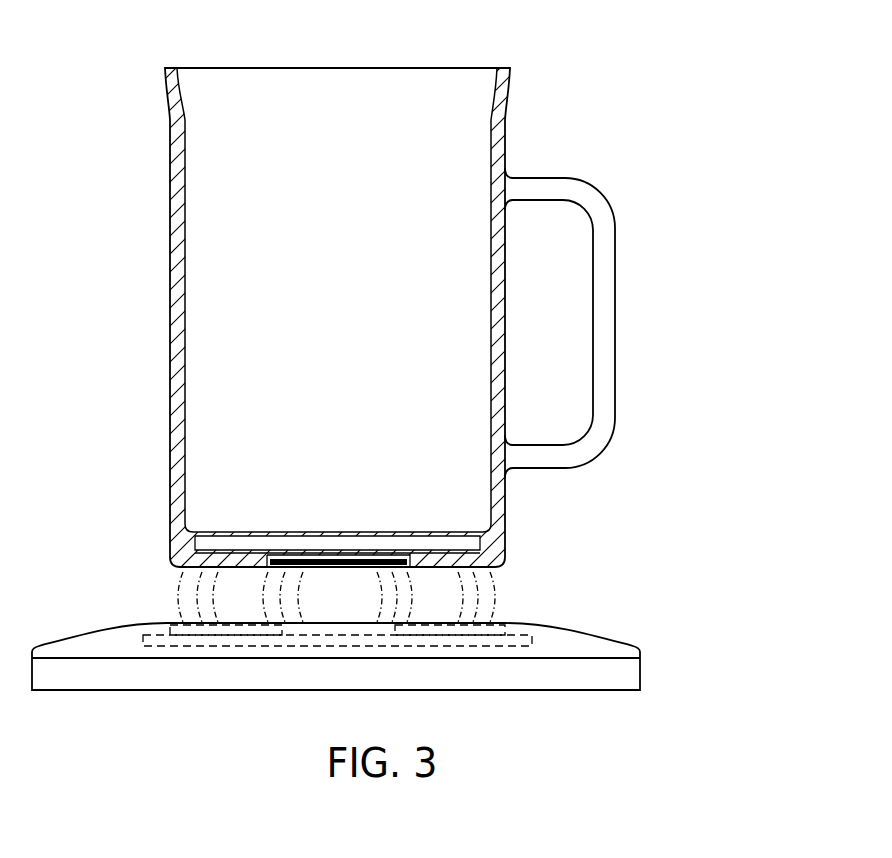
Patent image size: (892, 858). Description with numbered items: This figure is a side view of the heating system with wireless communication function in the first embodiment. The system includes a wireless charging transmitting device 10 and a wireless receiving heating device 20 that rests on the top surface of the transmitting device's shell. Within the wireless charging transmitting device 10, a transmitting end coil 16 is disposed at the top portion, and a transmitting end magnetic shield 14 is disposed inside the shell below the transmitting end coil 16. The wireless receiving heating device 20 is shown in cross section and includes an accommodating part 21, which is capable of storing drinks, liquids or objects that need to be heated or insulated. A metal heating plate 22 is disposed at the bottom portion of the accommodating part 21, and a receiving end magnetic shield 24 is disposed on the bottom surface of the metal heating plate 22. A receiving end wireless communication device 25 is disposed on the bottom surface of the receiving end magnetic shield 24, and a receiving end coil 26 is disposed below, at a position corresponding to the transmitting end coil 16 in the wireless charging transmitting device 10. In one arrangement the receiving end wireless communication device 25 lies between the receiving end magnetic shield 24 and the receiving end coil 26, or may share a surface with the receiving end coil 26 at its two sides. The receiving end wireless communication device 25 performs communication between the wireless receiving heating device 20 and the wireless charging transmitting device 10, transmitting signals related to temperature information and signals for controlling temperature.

The wireless charging transmitting device 10 is at (652, 672).
The transmitting end magnetic shield 14 is at (153, 637).
The transmitting end coil 16 is at (175, 624).
The wireless receiving heating device 20 is at (518, 84).
The accommodating part 21 is at (330, 95).
The metal heating plate 22 is at (222, 542).
The receiving end magnetic shield 24 is at (445, 556).
The receiving end wireless communication device 25 is at (504, 566).
The receiving end coil 26 is at (428, 567).